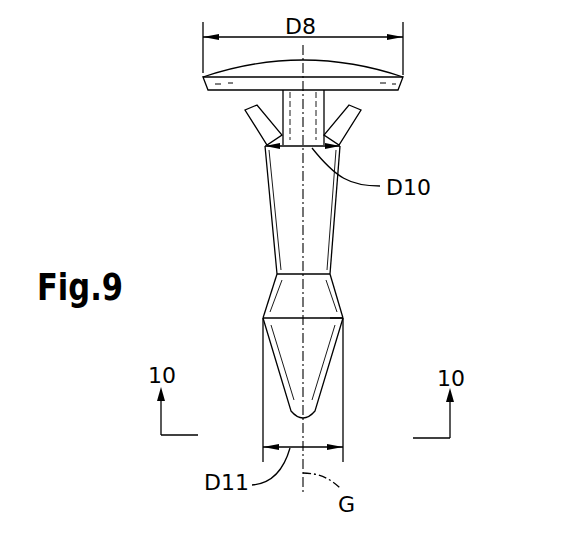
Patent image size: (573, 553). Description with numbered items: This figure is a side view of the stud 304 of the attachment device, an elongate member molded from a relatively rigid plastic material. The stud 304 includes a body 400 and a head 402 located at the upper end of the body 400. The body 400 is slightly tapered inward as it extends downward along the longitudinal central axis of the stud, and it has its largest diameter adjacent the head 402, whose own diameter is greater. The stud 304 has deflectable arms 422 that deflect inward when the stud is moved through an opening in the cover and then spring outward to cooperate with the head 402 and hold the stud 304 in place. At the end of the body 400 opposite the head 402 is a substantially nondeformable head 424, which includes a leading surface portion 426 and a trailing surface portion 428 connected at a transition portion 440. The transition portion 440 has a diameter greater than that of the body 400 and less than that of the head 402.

The stud 304 is at (370, 249).
The body 400 is at (282, 188).
The head 402 is at (363, 72).
The deflectable arms 422 is at (258, 125).
The nondeformable head 424 is at (366, 318).
The leading surface portion 426 is at (290, 353).
The trailing surface portion 428 is at (283, 295).
The transition portion 440 is at (273, 317).